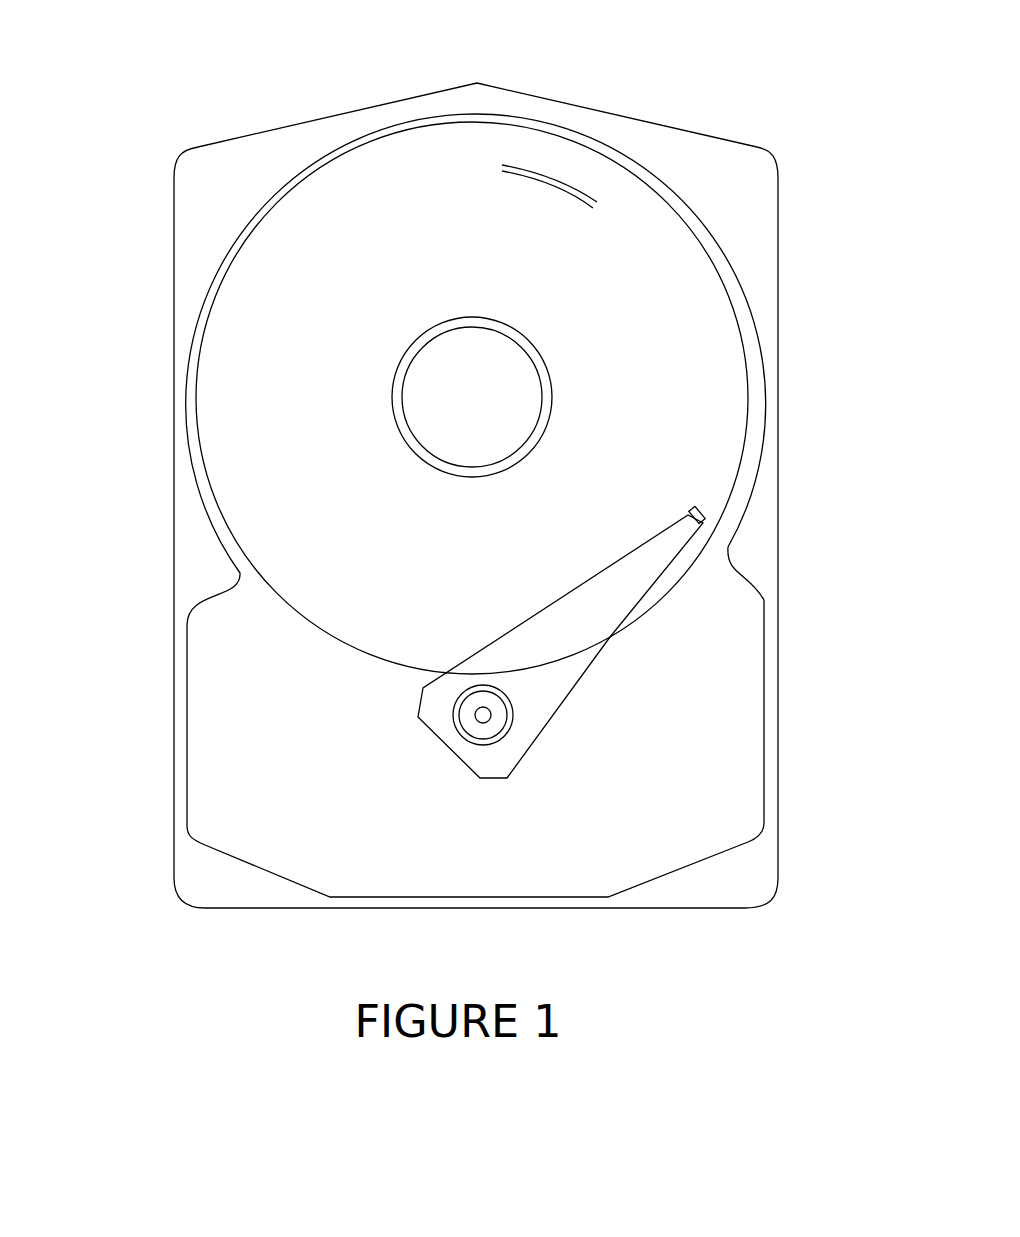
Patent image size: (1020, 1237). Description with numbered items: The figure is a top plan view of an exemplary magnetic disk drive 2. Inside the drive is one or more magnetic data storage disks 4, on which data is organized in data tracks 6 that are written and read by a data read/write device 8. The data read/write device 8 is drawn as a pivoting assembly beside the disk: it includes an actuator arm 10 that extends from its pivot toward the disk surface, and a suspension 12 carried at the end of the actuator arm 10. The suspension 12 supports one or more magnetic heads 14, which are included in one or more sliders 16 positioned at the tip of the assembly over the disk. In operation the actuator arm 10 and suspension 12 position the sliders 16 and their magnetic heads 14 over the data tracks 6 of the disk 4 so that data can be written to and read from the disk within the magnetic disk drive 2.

The magnetic disk drive 2 is at (140, 141).
The magnetic data storage disk 4 is at (365, 193).
The data tracks 6 is at (523, 165).
The data read/write device 8 is at (576, 573).
The actuator arm 10 is at (545, 663).
The suspension 12 is at (678, 530).
The magnetic head 14 is at (700, 512).
The slider 16 is at (697, 514).